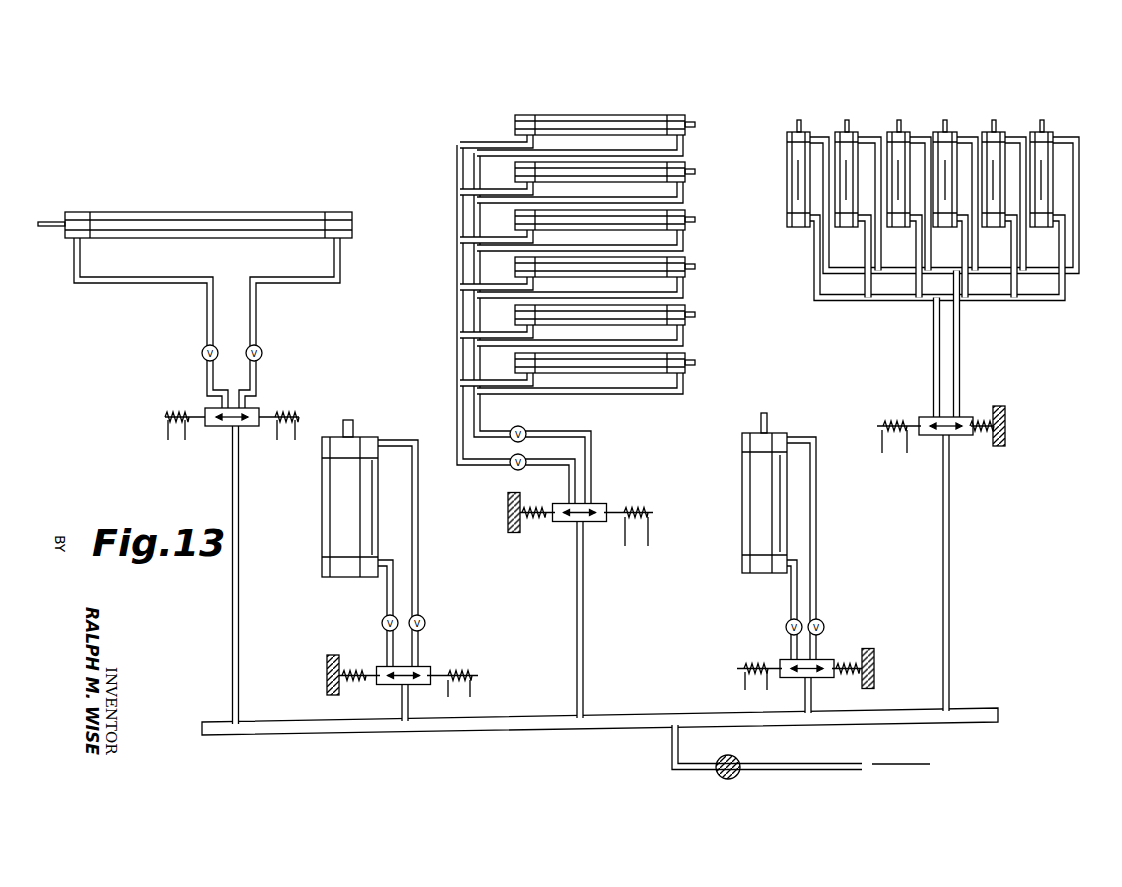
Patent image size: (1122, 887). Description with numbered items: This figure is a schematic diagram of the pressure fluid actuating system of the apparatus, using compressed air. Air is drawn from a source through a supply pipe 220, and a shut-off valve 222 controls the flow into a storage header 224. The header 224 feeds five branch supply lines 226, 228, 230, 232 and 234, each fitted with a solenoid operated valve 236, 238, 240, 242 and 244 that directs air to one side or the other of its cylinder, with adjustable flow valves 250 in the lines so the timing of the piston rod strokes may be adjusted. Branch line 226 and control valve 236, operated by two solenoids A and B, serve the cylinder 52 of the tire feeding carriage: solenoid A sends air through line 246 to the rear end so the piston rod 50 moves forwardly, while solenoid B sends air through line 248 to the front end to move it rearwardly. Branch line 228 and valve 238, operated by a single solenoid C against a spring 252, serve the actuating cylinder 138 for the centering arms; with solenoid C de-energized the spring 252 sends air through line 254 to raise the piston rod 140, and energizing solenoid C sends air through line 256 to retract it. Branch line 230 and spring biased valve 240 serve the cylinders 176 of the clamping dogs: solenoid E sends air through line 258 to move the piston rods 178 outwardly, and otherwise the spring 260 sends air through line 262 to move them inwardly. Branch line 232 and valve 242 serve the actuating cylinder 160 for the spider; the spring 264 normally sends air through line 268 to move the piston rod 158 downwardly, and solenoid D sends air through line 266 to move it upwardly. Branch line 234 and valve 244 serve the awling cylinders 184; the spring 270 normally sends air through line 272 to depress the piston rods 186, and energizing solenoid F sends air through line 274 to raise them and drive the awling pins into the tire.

The piston rod 50 is at (52, 222).
The cylinder 52 is at (197, 212).
The actuating cylinder 138 is at (322, 512).
The piston rod 140 is at (355, 425).
The piston rod 158 is at (767, 414).
The actuating cylinder 160 is at (742, 480).
The cylinders 176 is at (688, 115).
The piston rods 178 is at (702, 124).
The actuating cylinders 184 is at (810, 132).
The piston rods 186 is at (798, 119).
The supply pipe 220 is at (844, 759).
The shut-off valve 222 is at (743, 755).
The storage header 224 is at (622, 716).
The branch supply line 226 is at (240, 604).
The branch supply line 228 is at (408, 713).
The branch supply line 230 is at (583, 603).
The branch supply line 232 is at (812, 703).
The branch supply line 234 is at (951, 567).
The solenoid operated control valve 236 is at (213, 441).
The solenoid operated control valve 238 is at (377, 667).
The spring biased solenoid control valve 240 is at (606, 503).
The spring biased solenoid control valve 242 is at (777, 659).
The spring biased solenoid control valve 244 is at (965, 417).
The line 246 is at (306, 282).
The line 248 is at (128, 282).
The adjustable flow valves 250 is at (200, 355).
The spring 252 is at (354, 678).
The line 254 is at (387, 602).
The line 256 is at (418, 530).
The line 258 is at (592, 439).
The spring 260 is at (537, 527).
The line 262 is at (456, 430).
The spring 264 is at (846, 659).
The line 266 is at (790, 586).
The line 268 is at (817, 515).
The spring 270 is at (993, 445).
The line 272 is at (960, 349).
The line 274 is at (932, 351).
The solenoid A is at (282, 440).
The solenoid B is at (169, 440).
The solenoid C is at (471, 692).
The solenoid D is at (745, 690).
The solenoid E is at (644, 548).
The solenoid F is at (904, 454).